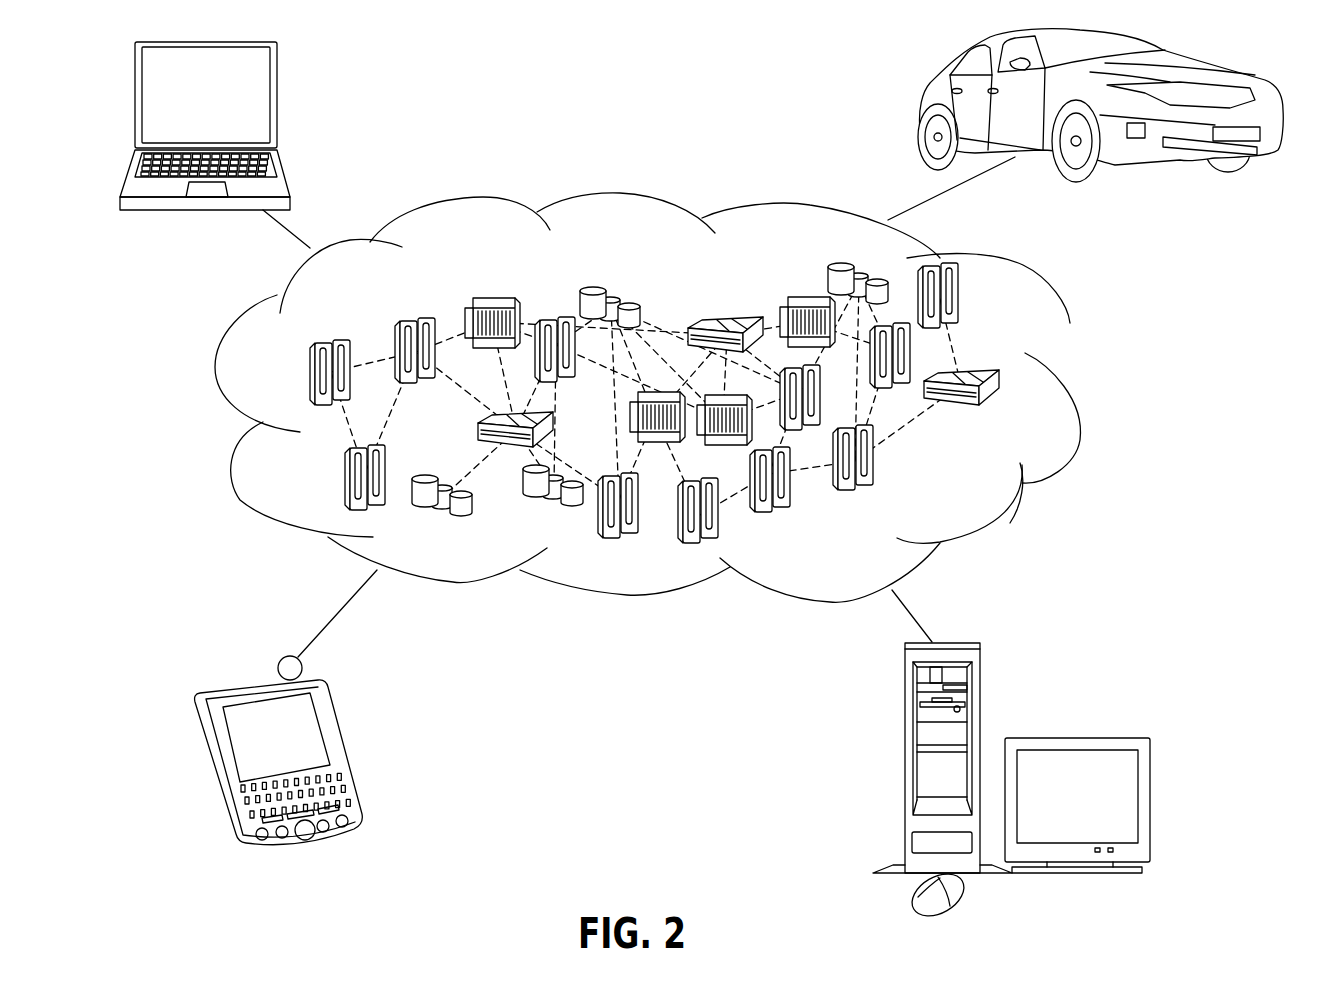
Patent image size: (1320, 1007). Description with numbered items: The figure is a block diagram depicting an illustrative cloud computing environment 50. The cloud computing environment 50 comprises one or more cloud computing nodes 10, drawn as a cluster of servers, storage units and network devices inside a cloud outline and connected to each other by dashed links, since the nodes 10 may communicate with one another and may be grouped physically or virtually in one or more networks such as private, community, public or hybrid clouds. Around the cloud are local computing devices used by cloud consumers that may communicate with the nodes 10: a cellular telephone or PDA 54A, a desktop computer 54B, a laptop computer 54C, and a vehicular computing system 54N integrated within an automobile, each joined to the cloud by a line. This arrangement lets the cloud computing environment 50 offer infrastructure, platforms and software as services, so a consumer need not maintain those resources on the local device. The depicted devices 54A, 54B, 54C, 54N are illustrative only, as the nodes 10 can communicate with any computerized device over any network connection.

The cloud computing nodes 10 is at (984, 491).
The cloud computing environment 50 is at (1073, 388).
The cellular telephone or PDA 54A is at (333, 718).
The desktop computer 54B is at (903, 703).
The laptop computer 54C is at (277, 80).
The vehicular computing system 54N is at (920, 97).